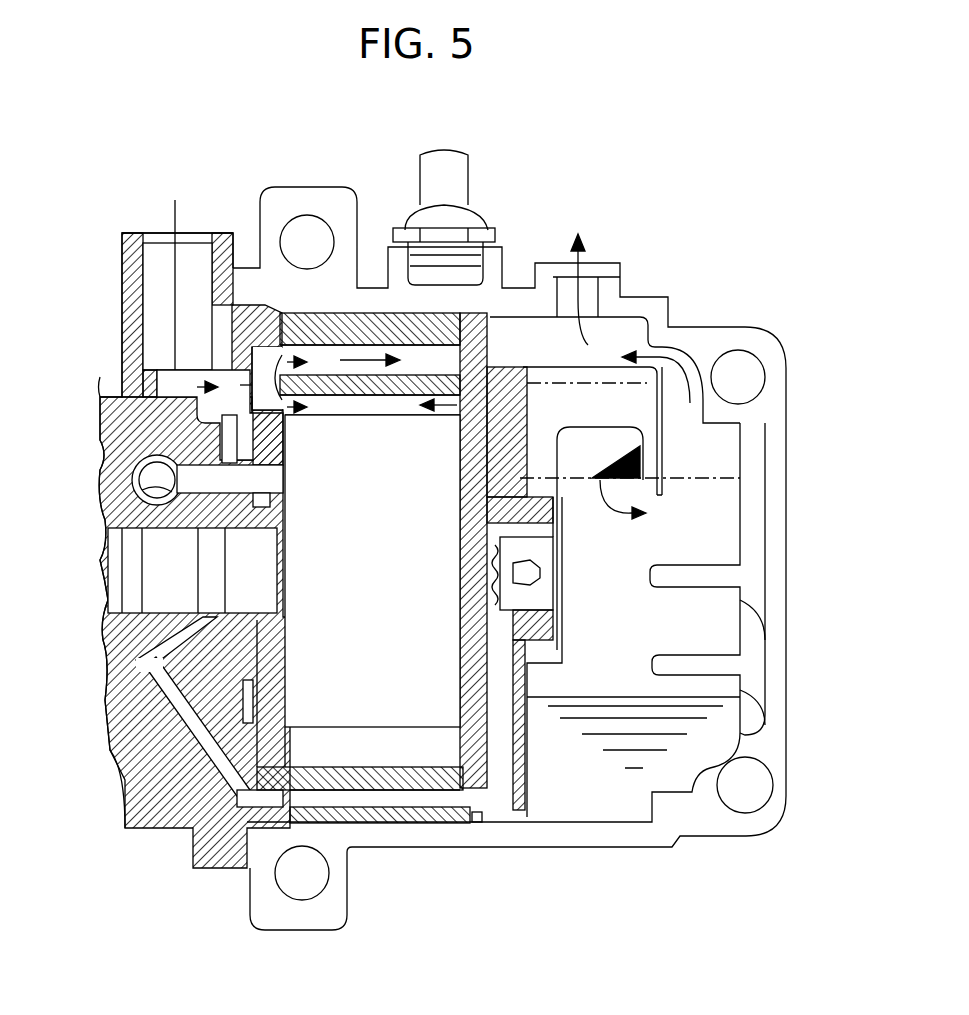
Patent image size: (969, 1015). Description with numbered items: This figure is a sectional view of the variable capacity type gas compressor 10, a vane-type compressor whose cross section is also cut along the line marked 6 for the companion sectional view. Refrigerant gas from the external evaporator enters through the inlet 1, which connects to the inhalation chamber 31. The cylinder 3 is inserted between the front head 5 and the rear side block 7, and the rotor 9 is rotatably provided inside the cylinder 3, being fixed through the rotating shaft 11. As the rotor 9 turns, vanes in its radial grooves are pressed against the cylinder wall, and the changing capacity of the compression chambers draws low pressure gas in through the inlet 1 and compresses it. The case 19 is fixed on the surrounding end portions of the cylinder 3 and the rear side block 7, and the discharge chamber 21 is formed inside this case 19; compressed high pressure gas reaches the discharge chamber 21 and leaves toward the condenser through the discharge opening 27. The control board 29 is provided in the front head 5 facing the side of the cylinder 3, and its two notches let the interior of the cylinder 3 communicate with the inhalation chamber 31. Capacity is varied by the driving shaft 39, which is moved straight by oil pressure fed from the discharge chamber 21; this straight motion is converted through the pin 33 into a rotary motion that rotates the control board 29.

The inlet 1 is at (162, 248).
The cylinder 3 is at (418, 823).
The front head 5 is at (157, 820).
The section line 6— 6 is at (358, 232).
The rear side block 7 is at (516, 820).
The rotor 9 is at (384, 588).
The variable capacity type gas compressor 10 is at (607, 172).
The rotating shaft 11 is at (157, 577).
The case 19 is at (772, 473).
The discharge chamber 21 is at (727, 520).
The discharge opening 27 is at (598, 293).
The control board 29 is at (243, 753).
The inhalation chamber 31 is at (226, 373).
The pin 33 is at (137, 483).
The driving shaft 39 is at (102, 505).